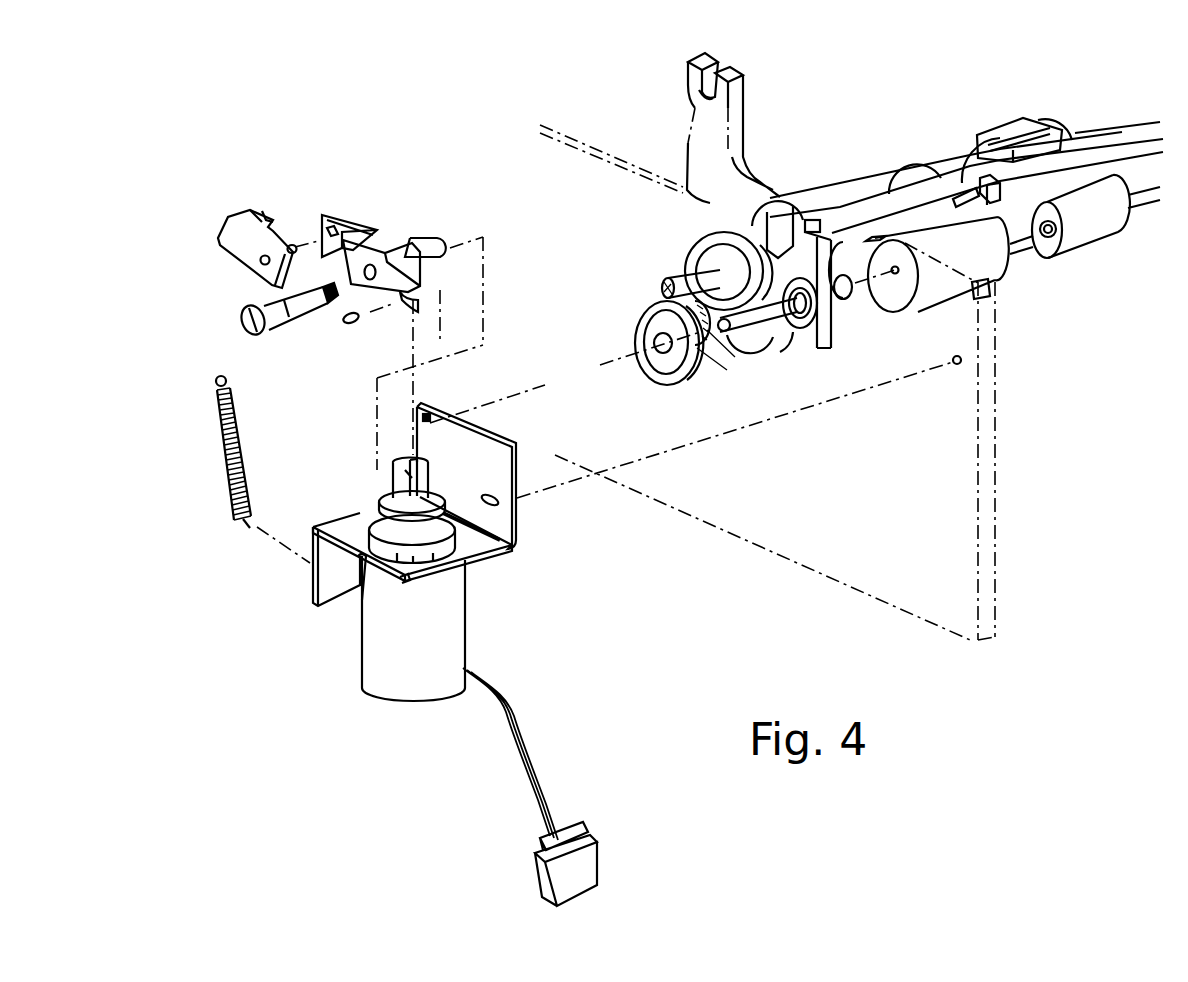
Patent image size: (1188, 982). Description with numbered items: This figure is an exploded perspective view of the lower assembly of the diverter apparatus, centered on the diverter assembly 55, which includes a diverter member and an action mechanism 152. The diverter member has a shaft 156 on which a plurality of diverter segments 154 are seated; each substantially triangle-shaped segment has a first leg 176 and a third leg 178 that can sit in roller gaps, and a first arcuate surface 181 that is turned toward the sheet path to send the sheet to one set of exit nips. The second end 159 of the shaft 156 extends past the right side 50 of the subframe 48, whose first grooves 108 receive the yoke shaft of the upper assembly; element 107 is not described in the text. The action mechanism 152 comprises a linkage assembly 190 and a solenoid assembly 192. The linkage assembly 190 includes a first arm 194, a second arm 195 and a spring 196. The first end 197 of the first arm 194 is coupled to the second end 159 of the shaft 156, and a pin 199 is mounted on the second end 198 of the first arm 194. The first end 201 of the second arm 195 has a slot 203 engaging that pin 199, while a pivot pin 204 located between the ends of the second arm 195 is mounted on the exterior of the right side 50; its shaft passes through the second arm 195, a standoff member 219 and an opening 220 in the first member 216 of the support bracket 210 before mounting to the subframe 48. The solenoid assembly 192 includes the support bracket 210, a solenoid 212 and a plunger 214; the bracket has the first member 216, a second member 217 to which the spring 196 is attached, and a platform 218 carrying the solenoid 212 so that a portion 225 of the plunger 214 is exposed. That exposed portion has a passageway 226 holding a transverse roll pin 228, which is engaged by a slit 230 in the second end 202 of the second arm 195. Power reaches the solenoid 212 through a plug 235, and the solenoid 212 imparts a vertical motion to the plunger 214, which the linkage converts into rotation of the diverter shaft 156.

The diverter assembly 55 is at (238, 132).
The first arm 194 is at (235, 238).
The first end 197 is at (264, 210).
The pin 199 is at (295, 243).
The first end 201 is at (326, 218).
The slot 203 is at (335, 221).
The second arm 195 is at (376, 228).
The standoff member 219 is at (414, 243).
The slit 230 is at (420, 306).
The second end 202 is at (395, 312).
The roll pin 228 is at (358, 325).
The linkage assembly 190 is at (247, 292).
The second end 198 is at (245, 310).
The pivot pin 204 is at (287, 318).
The spring 196 is at (226, 470).
The action mechanism 152 is at (355, 710).
The solenoid 212 is at (420, 698).
The portion 225 is at (382, 474).
The solenoid assembly 192 is at (493, 600).
The plunger 214 is at (487, 556).
The support bracket 210 is at (312, 590).
The first member 216 is at (518, 462).
The opening 220 is at (430, 414).
The passageway 226 is at (508, 523).
The second member 217 is at (310, 560).
The platform 218 is at (358, 560).
The plug 235 is at (597, 862).
The right side 50 is at (908, 152).
The third leg 178 is at (1073, 133).
The shaft 156 is at (902, 197).
The first leg 176 is at (982, 138).
The first arcuate surface 181 is at (995, 140).
The diverter segments 154 is at (1035, 136).
The second end 159 is at (753, 228).
The bracket 107 is at (738, 117).
The first grooves 108 is at (725, 63).
The subframe 48 is at (580, 285).